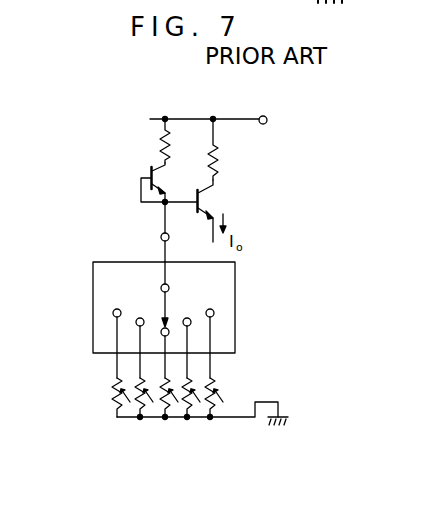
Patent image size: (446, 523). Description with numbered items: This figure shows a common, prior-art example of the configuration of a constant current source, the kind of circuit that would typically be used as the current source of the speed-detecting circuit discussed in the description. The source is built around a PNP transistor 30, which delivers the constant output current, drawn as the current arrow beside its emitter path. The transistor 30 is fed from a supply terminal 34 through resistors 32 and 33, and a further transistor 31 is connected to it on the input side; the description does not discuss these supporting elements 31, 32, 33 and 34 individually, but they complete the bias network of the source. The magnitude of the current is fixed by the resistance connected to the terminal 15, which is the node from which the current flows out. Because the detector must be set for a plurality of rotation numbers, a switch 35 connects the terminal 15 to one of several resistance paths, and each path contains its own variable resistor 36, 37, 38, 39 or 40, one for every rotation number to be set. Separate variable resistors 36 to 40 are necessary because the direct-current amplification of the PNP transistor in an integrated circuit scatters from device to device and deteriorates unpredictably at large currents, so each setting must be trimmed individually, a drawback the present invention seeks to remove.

The terminal 15 is at (170, 238).
The output transistor 30 is at (204, 204).
The transistor 31 is at (157, 177).
The resistor 32 is at (171, 147).
The resistor 33 is at (220, 155).
The power supply terminal 34 is at (266, 117).
The switch 35 is at (93, 318).
The variable resistor 36 is at (112, 393).
The variable resistor 37 is at (143, 404).
The variable resistor 38 is at (170, 404).
The variable resistor 39 is at (196, 404).
The variable resistor 40 is at (218, 393).